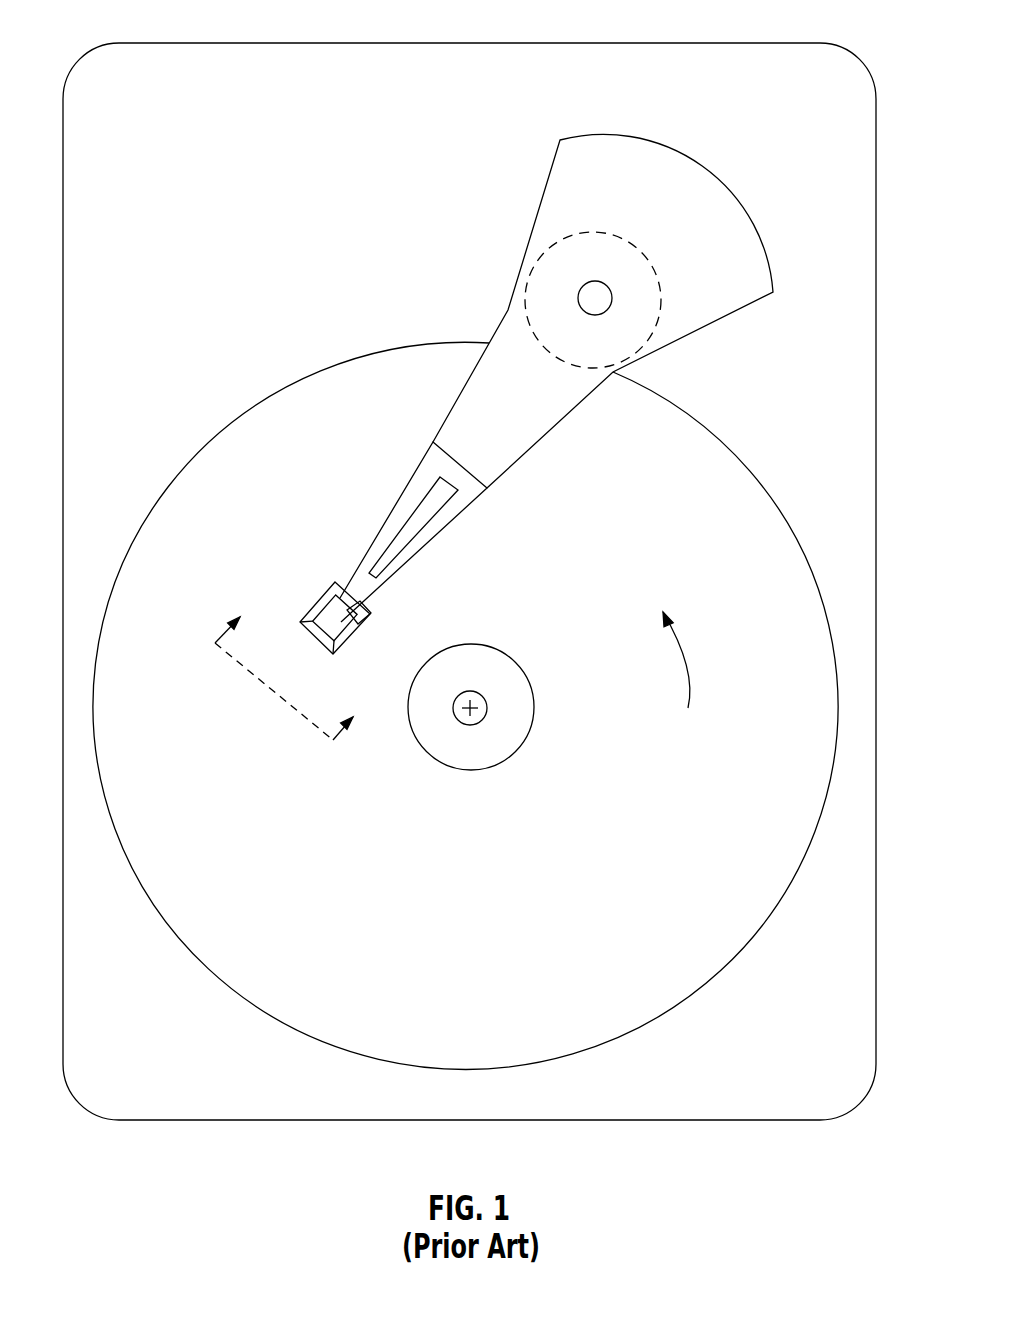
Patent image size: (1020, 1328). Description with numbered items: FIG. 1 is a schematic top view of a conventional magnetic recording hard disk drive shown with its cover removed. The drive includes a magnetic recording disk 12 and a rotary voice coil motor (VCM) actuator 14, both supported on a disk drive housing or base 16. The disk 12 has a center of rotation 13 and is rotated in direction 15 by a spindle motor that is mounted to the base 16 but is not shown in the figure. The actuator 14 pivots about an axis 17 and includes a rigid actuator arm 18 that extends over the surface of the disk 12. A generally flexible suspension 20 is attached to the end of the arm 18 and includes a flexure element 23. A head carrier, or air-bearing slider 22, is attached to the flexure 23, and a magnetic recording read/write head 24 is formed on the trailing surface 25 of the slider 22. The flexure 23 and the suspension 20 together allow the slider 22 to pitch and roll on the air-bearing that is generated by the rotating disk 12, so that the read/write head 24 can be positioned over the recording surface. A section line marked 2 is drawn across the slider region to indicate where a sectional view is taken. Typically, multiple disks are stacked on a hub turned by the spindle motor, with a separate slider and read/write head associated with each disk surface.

The section line 2- 2 is at (293, 664).
The magnetic recording disk 12 is at (480, 972).
The center of rotation 13 is at (487, 700).
The rotary voice coil motor actuator 14 is at (706, 164).
The direction 15 is at (687, 673).
The disk drive housing or base 16 is at (747, 43).
The axis 17 is at (590, 297).
The rigid actuator arm 18 is at (465, 393).
The suspension 20 is at (418, 482).
The air-bearing slider 22 is at (330, 595).
The flexure element 23 is at (357, 622).
The magnetic recording read/write head 24 is at (343, 652).
The trailing surface 25 is at (307, 628).